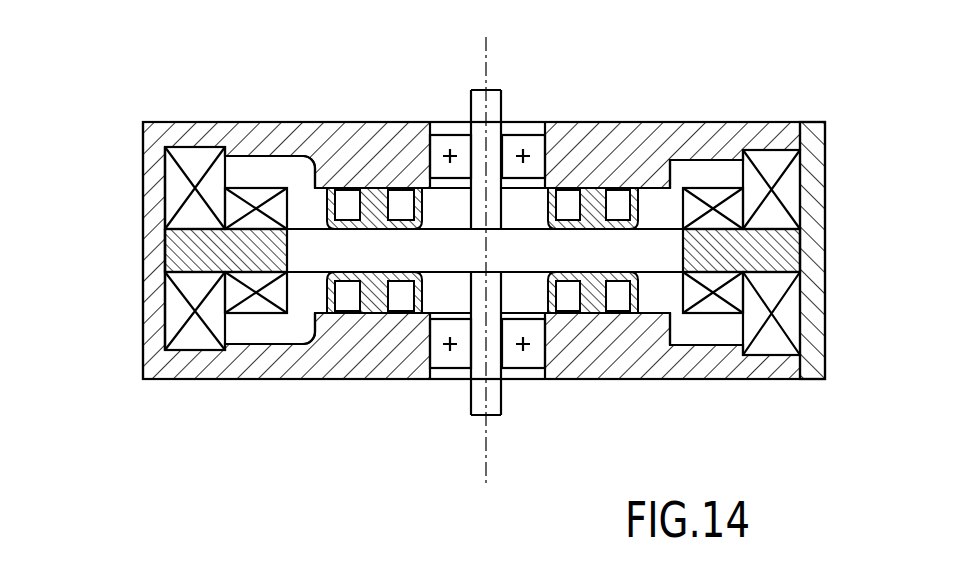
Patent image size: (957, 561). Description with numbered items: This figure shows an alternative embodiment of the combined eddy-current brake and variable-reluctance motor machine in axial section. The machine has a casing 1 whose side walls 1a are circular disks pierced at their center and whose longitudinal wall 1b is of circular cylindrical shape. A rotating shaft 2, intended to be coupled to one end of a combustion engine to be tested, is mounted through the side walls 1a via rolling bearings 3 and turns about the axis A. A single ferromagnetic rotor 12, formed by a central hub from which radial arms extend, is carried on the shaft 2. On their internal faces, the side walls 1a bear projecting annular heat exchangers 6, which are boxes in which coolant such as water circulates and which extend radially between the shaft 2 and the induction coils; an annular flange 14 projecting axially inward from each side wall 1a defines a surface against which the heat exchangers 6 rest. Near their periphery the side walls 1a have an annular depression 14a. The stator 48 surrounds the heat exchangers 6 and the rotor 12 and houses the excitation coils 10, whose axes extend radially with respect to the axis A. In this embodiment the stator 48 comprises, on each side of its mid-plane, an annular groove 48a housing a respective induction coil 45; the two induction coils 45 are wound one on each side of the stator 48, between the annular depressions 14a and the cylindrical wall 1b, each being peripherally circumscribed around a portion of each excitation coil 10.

The casing 1 is at (139, 385).
The side walls 1a is at (252, 138).
The longitudinal wall 1b is at (152, 183).
The rotating shaft 2 is at (478, 105).
The rolling bearings 3 is at (437, 128).
The heat exchanger 6 is at (373, 203).
The excitation coils 10 is at (268, 192).
The rotor 12 is at (514, 253).
The annular flange 14 is at (660, 172).
The annular depression 14a is at (232, 147).
The induction coil 45 is at (188, 158).
The stator 48 is at (162, 250).
The annular groove 48a is at (183, 312).
The axis A is at (480, 462).